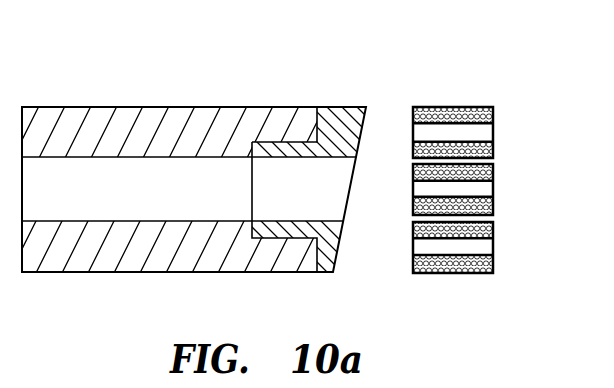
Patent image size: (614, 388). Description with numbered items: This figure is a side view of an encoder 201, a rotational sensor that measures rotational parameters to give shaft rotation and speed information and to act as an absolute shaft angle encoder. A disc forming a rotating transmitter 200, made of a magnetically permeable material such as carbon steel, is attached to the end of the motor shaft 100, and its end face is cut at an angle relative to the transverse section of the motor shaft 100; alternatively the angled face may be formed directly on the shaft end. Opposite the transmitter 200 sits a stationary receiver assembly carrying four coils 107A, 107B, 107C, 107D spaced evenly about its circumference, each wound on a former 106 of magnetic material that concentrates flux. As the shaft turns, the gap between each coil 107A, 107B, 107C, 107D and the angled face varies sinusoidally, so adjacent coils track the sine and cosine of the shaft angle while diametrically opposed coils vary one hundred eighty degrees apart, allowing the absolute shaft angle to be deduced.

The motor shaft 100 is at (217, 107).
The rotating transmitter 200 is at (340, 107).
The encoder 201 is at (367, 282).
The former 106 is at (486, 131).
The coil 107A is at (442, 107).
The coil 107B is at (493, 263).
The coil 107C is at (514, 285).
The coil 107D is at (484, 206).